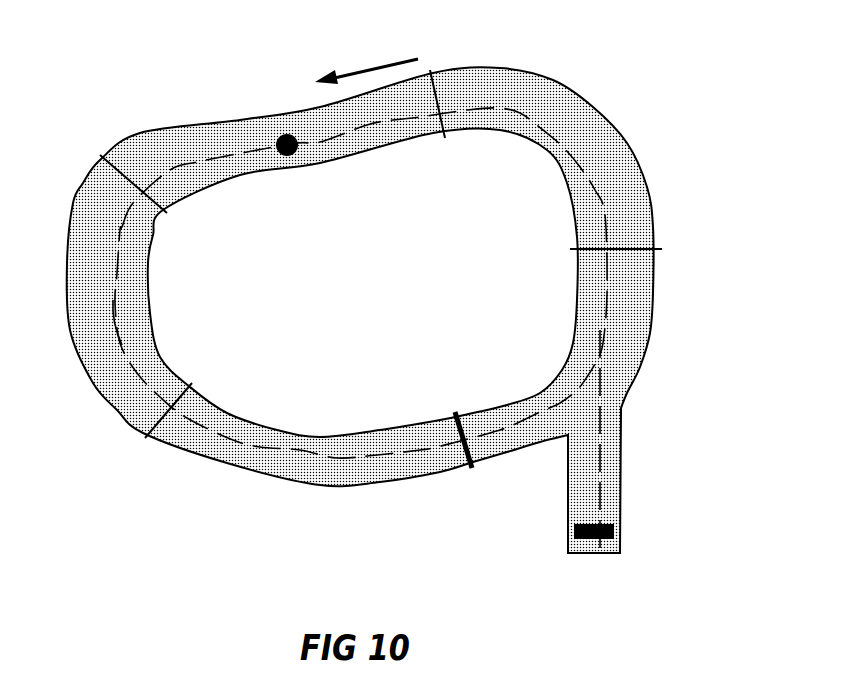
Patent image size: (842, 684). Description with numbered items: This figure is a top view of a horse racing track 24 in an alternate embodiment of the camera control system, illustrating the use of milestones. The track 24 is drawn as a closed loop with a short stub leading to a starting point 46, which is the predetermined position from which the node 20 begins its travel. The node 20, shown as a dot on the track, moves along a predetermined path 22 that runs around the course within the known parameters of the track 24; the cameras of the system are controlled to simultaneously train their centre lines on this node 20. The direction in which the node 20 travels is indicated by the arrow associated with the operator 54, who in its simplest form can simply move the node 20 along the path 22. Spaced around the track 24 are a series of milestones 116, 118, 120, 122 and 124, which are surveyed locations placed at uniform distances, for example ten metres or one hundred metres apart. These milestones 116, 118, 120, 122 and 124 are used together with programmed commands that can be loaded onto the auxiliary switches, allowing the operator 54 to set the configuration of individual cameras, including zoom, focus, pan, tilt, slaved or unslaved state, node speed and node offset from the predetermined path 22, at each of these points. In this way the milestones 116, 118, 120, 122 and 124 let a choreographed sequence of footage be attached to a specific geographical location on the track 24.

The node 20 is at (284, 135).
The predetermined path 22 is at (114, 313).
The race course 24 is at (622, 157).
The starting point 46 is at (614, 527).
The operator 54 is at (343, 72).
The milestone 116 is at (643, 250).
The milestone 118 is at (445, 90).
The milestone 120 is at (103, 157).
The milestone 122 is at (157, 427).
The milestone 124 is at (453, 417).